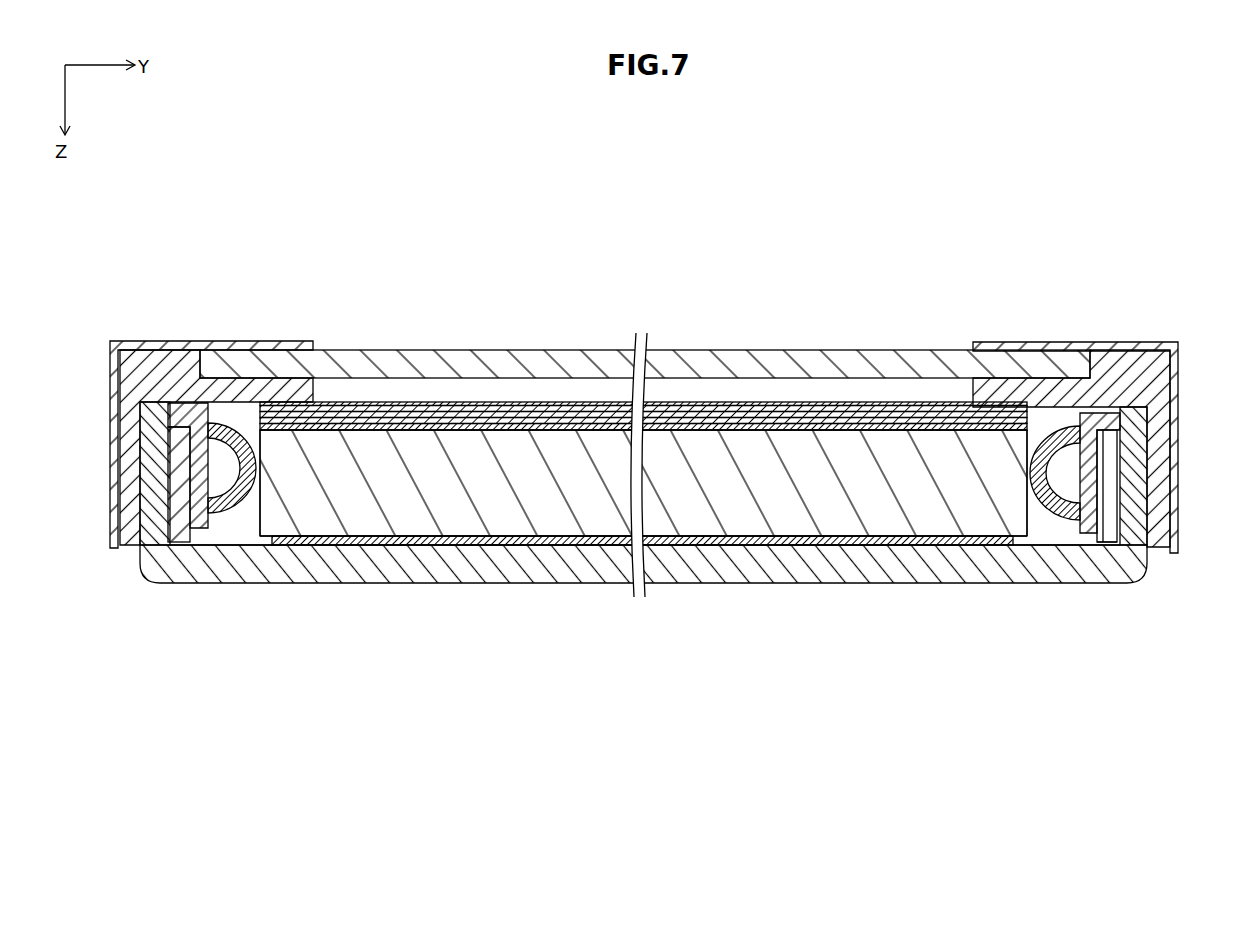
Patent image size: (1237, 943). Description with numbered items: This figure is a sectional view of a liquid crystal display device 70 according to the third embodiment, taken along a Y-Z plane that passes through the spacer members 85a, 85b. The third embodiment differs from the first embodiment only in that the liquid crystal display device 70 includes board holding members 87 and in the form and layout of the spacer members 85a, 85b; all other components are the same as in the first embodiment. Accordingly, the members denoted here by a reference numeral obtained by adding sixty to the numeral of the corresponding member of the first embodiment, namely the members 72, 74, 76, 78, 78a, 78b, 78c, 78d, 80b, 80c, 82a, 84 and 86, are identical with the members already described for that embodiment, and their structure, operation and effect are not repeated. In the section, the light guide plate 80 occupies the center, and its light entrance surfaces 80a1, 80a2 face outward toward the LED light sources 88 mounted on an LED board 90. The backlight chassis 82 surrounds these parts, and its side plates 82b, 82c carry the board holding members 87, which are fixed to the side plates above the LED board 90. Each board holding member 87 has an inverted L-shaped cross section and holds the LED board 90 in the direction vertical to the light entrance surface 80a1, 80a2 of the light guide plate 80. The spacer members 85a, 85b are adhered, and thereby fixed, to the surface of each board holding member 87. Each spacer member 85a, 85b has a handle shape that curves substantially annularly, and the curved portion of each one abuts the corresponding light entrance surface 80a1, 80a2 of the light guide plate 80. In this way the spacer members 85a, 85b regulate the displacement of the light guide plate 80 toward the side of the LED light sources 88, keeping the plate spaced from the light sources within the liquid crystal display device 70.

The liquid crystal display device 70 is at (290, 305).
The outer plate 72 is at (137, 348).
The frame 74 is at (167, 350).
The top cover 76 is at (245, 348).
The laminated layer body 78 is at (643, 346).
The first layer 78a is at (603, 301).
The second layer 78b is at (468, 413).
The third layer 78c is at (510, 408).
The fourth layer 78d is at (566, 403).
The light guide plate 80 is at (635, 538).
The light entrance surface 80a1 is at (265, 504).
The light entrance surface 80a2 is at (1028, 514).
The upper surface of movable body 80b is at (930, 428).
The lower surface of movable body 80c is at (795, 540).
The backlight chassis 82 is at (645, 538).
The bottom wall of housing 82a is at (537, 540).
The side plate 82b is at (150, 478).
The side plate 82c is at (1135, 478).
The base plate 84 is at (440, 598).
The spacer member 85a is at (246, 512).
The spacer member 85b is at (1060, 520).
The adhesive layer 86 is at (318, 545).
The board holding member 87 is at (197, 517).
The LED light source 88 is at (1088, 447).
The LED board 90 is at (178, 512).